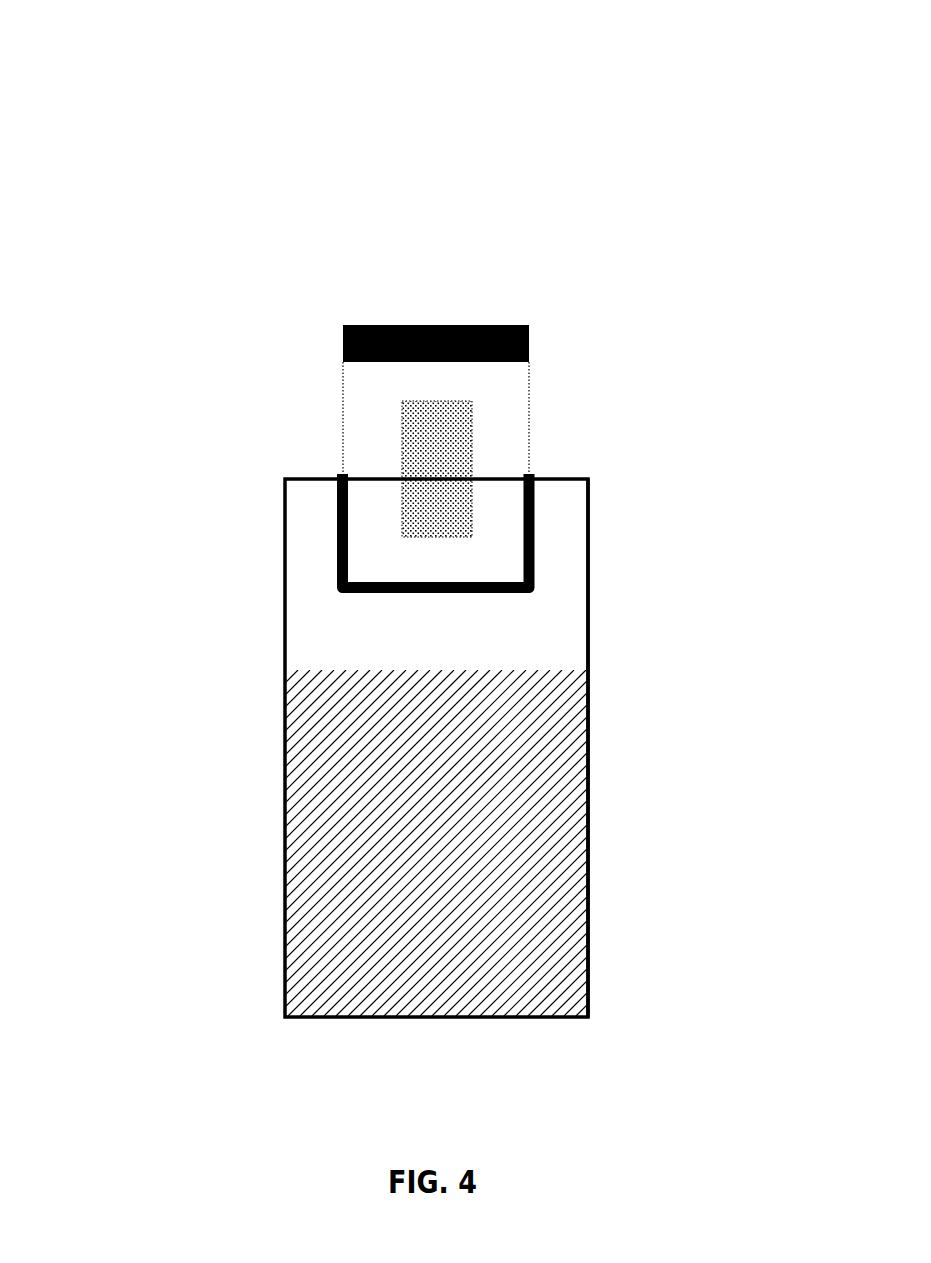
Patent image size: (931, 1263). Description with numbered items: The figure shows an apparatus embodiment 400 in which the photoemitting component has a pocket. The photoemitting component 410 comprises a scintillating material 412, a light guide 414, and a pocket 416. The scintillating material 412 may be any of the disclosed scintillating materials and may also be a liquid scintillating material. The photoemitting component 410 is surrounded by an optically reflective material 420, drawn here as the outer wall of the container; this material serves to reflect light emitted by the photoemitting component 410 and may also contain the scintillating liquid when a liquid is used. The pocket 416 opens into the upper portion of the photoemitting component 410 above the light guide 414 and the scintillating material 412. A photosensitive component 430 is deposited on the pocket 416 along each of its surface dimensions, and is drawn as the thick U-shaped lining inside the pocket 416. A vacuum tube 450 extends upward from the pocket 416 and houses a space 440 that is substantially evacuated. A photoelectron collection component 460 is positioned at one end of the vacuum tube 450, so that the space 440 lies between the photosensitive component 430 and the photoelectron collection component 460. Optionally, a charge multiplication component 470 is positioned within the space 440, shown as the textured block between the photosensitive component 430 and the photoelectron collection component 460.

The apparatus embodiment 400 is at (115, 113).
The photoemitting component 410 is at (638, 698).
The scintillating material 412 is at (455, 861).
The light guide 414 is at (455, 643).
The pocket 416 is at (553, 545).
The optically reflective material 420 is at (588, 832).
The photosensitive component 430 is at (337, 533).
The space 440 is at (455, 569).
The vacuum tube 450 is at (343, 409).
The photoelectron collection component 460 is at (343, 343).
The charge multiplication component 470 is at (455, 491).